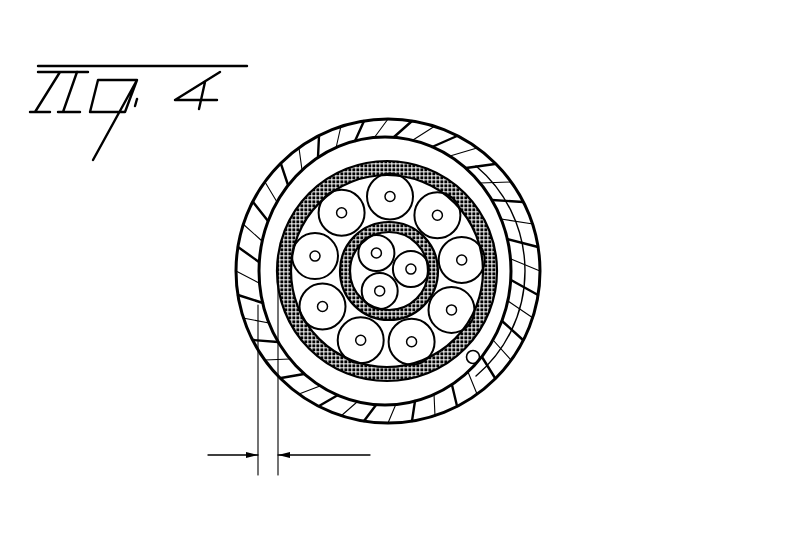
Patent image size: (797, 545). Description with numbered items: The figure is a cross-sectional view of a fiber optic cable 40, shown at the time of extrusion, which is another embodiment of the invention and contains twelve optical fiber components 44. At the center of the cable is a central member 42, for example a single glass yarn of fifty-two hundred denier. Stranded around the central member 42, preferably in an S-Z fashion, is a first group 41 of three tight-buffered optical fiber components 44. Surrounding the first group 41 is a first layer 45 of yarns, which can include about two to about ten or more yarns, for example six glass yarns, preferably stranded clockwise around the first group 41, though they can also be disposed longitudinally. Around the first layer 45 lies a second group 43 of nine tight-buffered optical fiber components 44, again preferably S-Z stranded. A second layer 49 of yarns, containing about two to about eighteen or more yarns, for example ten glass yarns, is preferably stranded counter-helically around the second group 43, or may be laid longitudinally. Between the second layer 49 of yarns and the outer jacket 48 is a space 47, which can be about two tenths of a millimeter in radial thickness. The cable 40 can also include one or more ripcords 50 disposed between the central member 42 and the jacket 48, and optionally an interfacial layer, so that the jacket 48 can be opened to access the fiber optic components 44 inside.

The fiber optic cable 40 is at (546, 28).
The first group 41 is at (400, 238).
The central member 42 is at (388, 272).
The second group 43 is at (313, 223).
The optical fiber component 44 is at (317, 305).
The first layer of yarns 45 is at (480, 292).
The space 47 is at (313, 366).
The jacket 48 is at (287, 165).
The second layer of yarns 49 is at (432, 165).
The ripcord 50 is at (480, 357).